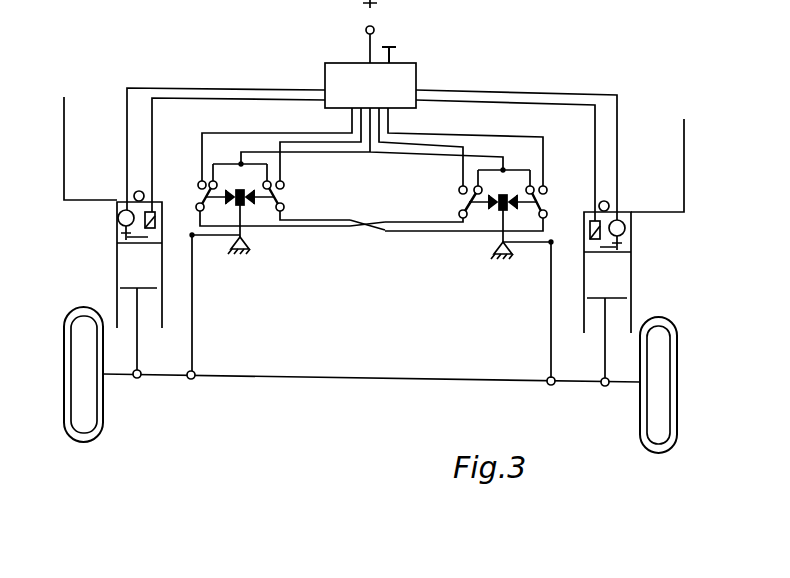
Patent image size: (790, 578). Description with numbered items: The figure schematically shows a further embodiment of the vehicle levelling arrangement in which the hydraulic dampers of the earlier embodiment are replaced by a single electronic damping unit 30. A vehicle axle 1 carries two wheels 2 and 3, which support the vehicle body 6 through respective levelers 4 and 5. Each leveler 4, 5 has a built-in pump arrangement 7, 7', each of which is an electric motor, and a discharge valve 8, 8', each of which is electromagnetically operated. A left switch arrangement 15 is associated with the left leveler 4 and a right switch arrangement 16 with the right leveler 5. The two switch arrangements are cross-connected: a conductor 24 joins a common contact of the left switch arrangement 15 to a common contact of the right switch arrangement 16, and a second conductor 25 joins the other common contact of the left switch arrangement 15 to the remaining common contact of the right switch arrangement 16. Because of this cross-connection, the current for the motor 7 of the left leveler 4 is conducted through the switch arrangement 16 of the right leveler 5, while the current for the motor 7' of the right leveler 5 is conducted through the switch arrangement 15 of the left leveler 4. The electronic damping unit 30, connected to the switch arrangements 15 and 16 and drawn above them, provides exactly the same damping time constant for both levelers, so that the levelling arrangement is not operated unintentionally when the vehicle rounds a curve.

The vehicle axle 1 is at (374, 380).
The wheel 2 is at (102, 416).
The wheel 3 is at (640, 432).
The leveler 4 is at (122, 263).
The leveler 5 is at (627, 282).
The vehicle body 6 is at (64, 140).
The pump arrangement 7 is at (103, 221).
The discharge valve 8 is at (113, 233).
The pump arrangement 7' is at (632, 227).
The discharge valve 8' is at (627, 240).
The left switch arrangement 15 is at (232, 150).
The right switch arrangement 16 is at (522, 156).
The conductor 24 is at (320, 229).
The conductor 25 is at (407, 218).
The electronic damping unit 30 is at (347, 72).